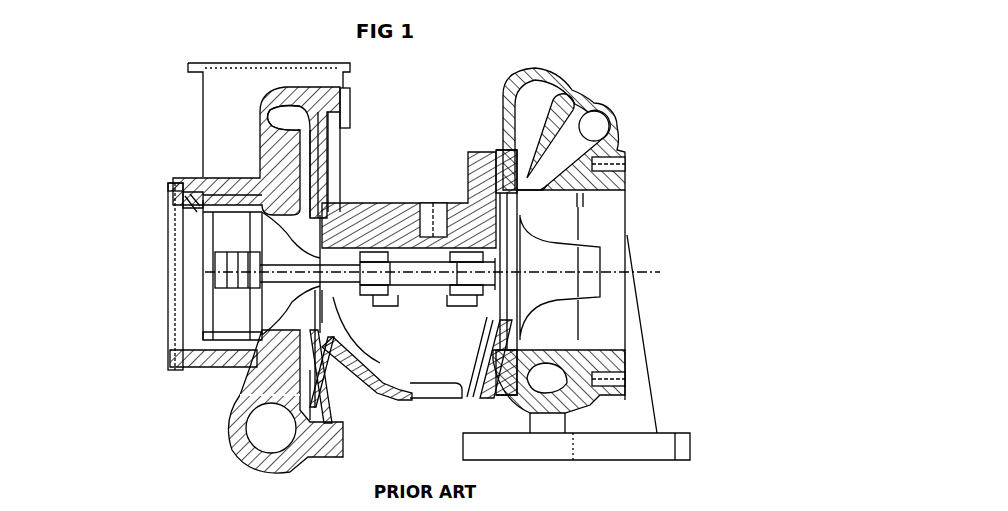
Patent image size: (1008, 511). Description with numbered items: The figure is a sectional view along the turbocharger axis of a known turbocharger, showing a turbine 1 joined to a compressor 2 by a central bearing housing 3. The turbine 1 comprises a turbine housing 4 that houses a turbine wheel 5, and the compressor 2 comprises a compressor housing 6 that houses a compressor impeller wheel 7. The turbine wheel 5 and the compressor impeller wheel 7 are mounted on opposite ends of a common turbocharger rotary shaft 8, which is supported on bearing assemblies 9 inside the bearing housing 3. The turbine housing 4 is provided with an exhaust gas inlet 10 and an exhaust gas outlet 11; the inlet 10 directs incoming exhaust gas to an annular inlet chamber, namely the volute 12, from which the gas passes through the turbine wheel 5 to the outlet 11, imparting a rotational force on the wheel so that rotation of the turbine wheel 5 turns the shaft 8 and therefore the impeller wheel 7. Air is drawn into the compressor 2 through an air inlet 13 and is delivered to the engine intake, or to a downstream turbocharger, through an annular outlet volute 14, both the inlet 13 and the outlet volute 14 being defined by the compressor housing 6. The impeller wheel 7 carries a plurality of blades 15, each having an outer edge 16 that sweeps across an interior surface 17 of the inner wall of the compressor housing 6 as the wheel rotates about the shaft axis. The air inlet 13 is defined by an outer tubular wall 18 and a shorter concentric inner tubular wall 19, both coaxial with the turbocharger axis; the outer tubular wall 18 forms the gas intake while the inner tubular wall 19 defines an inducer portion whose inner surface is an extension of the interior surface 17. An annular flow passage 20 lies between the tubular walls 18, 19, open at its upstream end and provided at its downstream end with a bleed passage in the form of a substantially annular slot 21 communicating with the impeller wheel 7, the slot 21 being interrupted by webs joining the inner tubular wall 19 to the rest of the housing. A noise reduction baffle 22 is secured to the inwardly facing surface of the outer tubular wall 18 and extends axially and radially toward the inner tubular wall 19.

The turbine 1 is at (665, 349).
The compressor 2 is at (165, 155).
The bearing housing 3 is at (412, 203).
The turbine housing 4 is at (627, 185).
The turbine wheel 5 is at (570, 235).
The compressor housing 6 is at (195, 370).
The compressor impeller wheel 7 is at (250, 305).
The turbocharger rotary shaft 8 is at (410, 284).
The bearing assemblies 9 is at (395, 293).
The exhaust gas inlet 10 is at (565, 462).
The exhaust gas outlet 11 is at (615, 307).
The volute 12 is at (542, 100).
The air inlet 13 is at (188, 263).
The annular outlet volute 14 is at (290, 122).
The blades 15 is at (316, 208).
The outer edge 16 is at (304, 204).
The interior surface 17 is at (190, 199).
The outer tubular wall 18 is at (172, 184).
The inner tubular wall 19 is at (200, 338).
The annular flow passage 20 is at (225, 350).
The annular slot 21 is at (255, 342).
The noise reduction baffle 22 is at (196, 207).